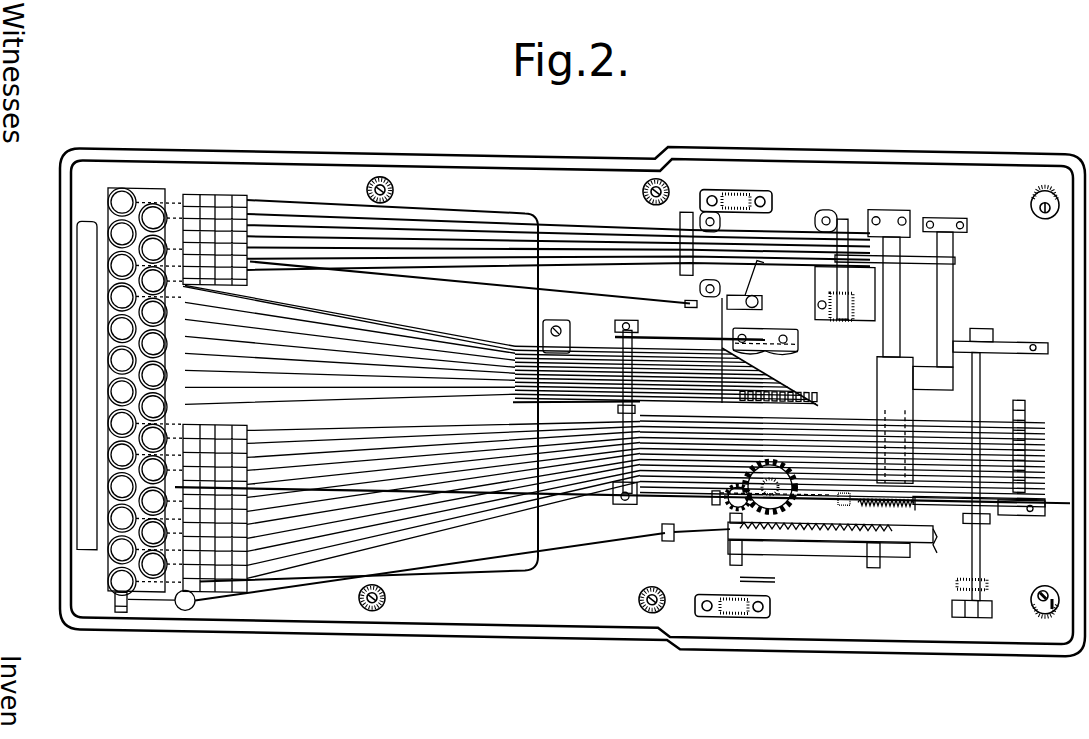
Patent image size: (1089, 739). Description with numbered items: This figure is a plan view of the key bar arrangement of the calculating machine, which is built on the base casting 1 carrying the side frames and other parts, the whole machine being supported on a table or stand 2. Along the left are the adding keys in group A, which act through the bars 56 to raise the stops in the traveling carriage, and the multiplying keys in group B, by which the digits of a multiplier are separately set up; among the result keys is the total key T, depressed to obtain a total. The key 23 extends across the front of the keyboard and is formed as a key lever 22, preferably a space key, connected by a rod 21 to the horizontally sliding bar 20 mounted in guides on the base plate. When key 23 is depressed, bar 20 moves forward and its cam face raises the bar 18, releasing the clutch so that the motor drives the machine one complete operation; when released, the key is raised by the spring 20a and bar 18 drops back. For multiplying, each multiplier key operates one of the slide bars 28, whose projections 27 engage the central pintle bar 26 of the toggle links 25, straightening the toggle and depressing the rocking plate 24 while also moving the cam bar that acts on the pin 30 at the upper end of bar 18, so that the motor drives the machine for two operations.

The base casting 1 is at (572, 396).
The table or stand 2 is at (560, 629).
The bar 18 is at (733, 502).
The horizontally sliding bar 20 is at (790, 487).
The spring 20a is at (876, 508).
The rod 21 is at (578, 487).
The key lever 22 is at (193, 486).
The key 23 is at (85, 402).
The rocking plate 24 is at (815, 390).
The toggle links 25 is at (895, 360).
The central pintle bar 26 is at (832, 547).
The projections 27 is at (830, 524).
The slide bars 28 is at (1000, 480).
The pin 30 is at (462, 563).
The bars 56 is at (779, 376).
The adding keys group A is at (108, 438).
The multiplying keys group B is at (110, 587).
The total key T is at (141, 598).